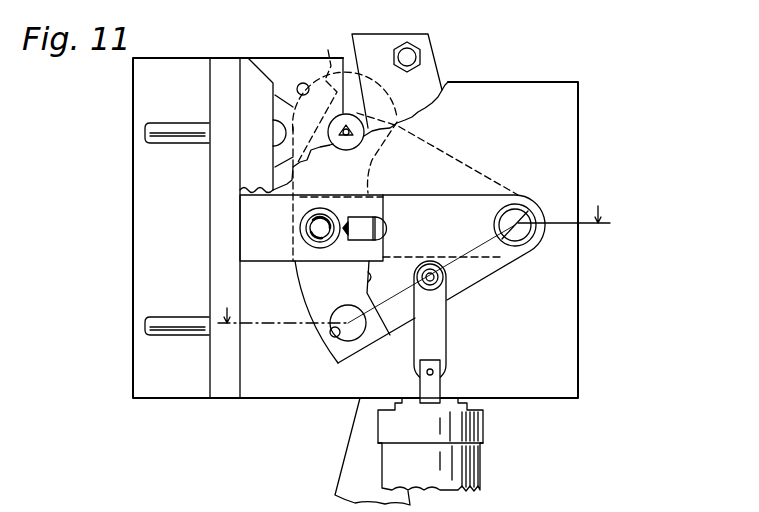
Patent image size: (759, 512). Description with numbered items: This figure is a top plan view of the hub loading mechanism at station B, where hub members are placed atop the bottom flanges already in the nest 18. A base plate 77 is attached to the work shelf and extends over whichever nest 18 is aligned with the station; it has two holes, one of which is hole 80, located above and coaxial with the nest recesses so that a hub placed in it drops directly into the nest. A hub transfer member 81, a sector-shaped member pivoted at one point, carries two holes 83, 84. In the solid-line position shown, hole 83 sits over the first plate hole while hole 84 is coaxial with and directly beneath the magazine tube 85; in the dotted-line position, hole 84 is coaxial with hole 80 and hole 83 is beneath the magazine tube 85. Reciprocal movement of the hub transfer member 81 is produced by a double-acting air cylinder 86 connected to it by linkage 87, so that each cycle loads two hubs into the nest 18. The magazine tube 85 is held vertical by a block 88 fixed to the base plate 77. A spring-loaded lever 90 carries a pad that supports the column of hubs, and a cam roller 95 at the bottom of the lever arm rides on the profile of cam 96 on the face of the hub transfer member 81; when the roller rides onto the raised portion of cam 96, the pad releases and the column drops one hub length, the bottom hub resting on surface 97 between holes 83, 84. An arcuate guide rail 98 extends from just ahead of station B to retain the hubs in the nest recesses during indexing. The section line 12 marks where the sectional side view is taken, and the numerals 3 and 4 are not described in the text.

The cam member 3 is at (345, 146).
The shaft bearing 4 is at (306, 226).
The section line 12— 12 is at (411, 254).
The nest 18 is at (263, 62).
The base plate 77 is at (541, 340).
The hole 80 is at (365, 142).
The hub transfer member 81 is at (468, 233).
The hole 83 is at (330, 337).
The hole 84 is at (388, 93).
The magazine tube 85 is at (300, 237).
The double-acting air cylinder 86 is at (417, 473).
The linkage 87 is at (446, 320).
The block 88 is at (240, 237).
The lever 90 is at (370, 215).
The cam roller 95 is at (387, 228).
The cam 96 is at (372, 291).
The surface 97 is at (335, 300).
The arcuate guide rail 98 is at (430, 46).